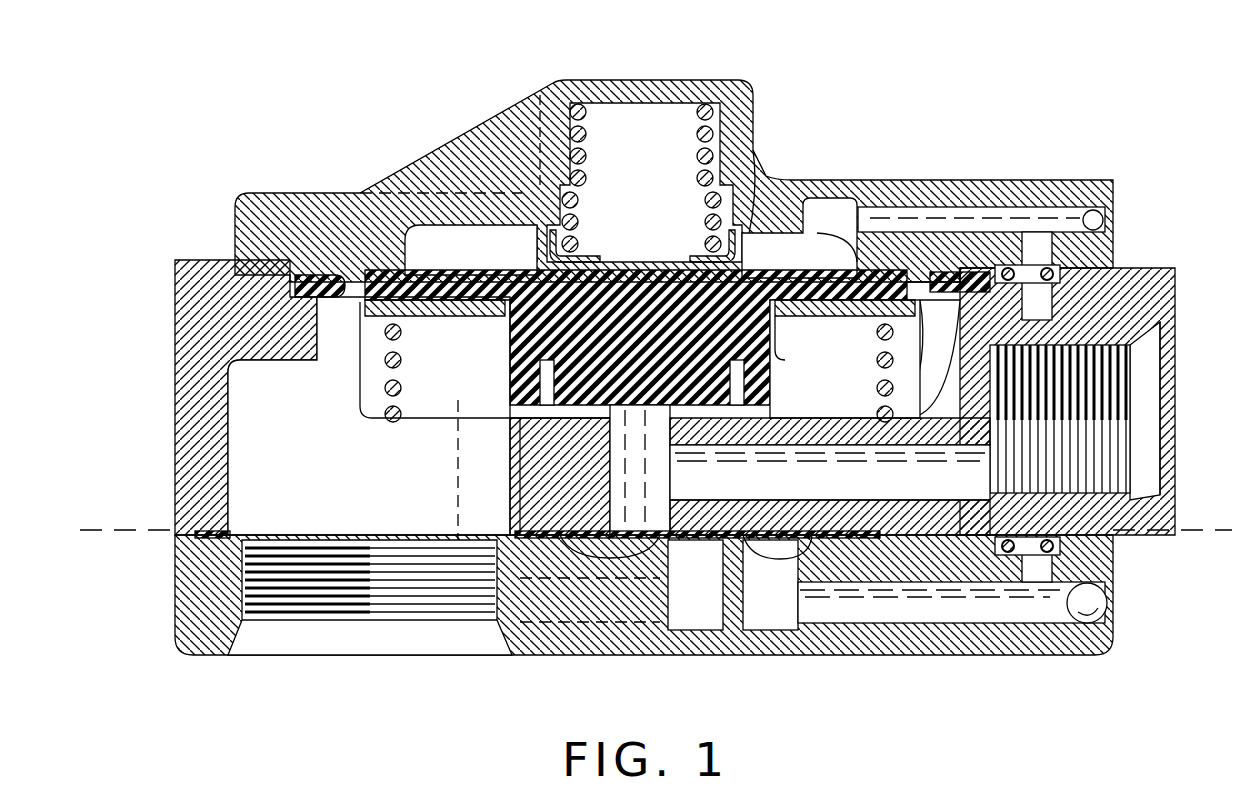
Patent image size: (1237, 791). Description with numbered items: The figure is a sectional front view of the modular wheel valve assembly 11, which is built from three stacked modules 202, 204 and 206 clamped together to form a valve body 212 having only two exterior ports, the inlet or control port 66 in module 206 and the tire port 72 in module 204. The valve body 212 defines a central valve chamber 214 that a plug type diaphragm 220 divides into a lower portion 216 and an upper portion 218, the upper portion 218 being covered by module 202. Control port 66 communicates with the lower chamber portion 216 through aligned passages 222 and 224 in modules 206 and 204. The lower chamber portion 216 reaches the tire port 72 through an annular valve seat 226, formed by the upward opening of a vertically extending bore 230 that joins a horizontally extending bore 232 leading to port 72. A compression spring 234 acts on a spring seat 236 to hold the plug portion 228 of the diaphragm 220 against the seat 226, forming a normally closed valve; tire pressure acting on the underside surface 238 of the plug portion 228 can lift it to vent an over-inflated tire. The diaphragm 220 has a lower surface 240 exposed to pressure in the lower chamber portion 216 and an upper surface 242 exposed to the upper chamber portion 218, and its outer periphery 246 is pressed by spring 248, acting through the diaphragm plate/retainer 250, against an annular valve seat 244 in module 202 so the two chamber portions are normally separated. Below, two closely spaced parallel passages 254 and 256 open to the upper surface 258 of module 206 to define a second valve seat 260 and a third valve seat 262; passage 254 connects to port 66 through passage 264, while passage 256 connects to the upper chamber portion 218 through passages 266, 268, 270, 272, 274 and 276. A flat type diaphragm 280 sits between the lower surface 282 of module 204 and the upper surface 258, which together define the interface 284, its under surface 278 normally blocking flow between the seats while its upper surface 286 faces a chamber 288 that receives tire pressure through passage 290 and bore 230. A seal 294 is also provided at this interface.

The wheel valve assembly 11 is at (435, 118).
The inlet or control port 66 is at (272, 640).
The tire port 72 is at (1150, 468).
The module 202 is at (232, 228).
The module 204 is at (183, 282).
The module 206 is at (188, 570).
The valve body 212 is at (190, 345).
The central valve chamber 214 is at (428, 160).
The lower valve chamber portion 216 is at (335, 327).
The upper valve chamber portion 218 is at (471, 250).
The plug type diaphragm 220 is at (538, 262).
The passage 222 is at (250, 640).
The passage 224 is at (228, 450).
The annular valve seat 226 is at (598, 418).
The plug portion 228 is at (548, 352).
The vertically extending bore 230 is at (618, 478).
The horizontally extending bore 232 is at (895, 492).
The compression spring 234 is at (700, 82).
The spring seat 236 is at (752, 175).
The underside surface 238 is at (630, 410).
The lower surface 240 is at (845, 359).
The upper surface 242 is at (820, 282).
The annular valve seat 244 is at (425, 253).
The outer periphery 246 is at (895, 288).
The spring 248 is at (876, 378).
The diaphragm plate/retainer 250 is at (920, 300).
The passage 254 is at (690, 612).
The passage 256 is at (770, 612).
The upper surface 258 is at (988, 525).
The second valve seat 260 is at (694, 545).
The third valve seat 262 is at (790, 548).
The passage 264 is at (602, 612).
The passage 266 is at (935, 612).
The passage 268 is at (1050, 555).
The passage 270 is at (1045, 285).
The passage 272 is at (1055, 242).
The passage 274 is at (1035, 226).
The passage 276 is at (836, 212).
The under surface 278 is at (833, 522).
The flat type diaphragm 280 is at (688, 520).
The lower surface 282 is at (315, 528).
The interface 284 is at (88, 528).
The upper surface 286 is at (607, 556).
The chamber 288 is at (768, 530).
The passage 290 is at (965, 488).
The seal 294 is at (200, 530).